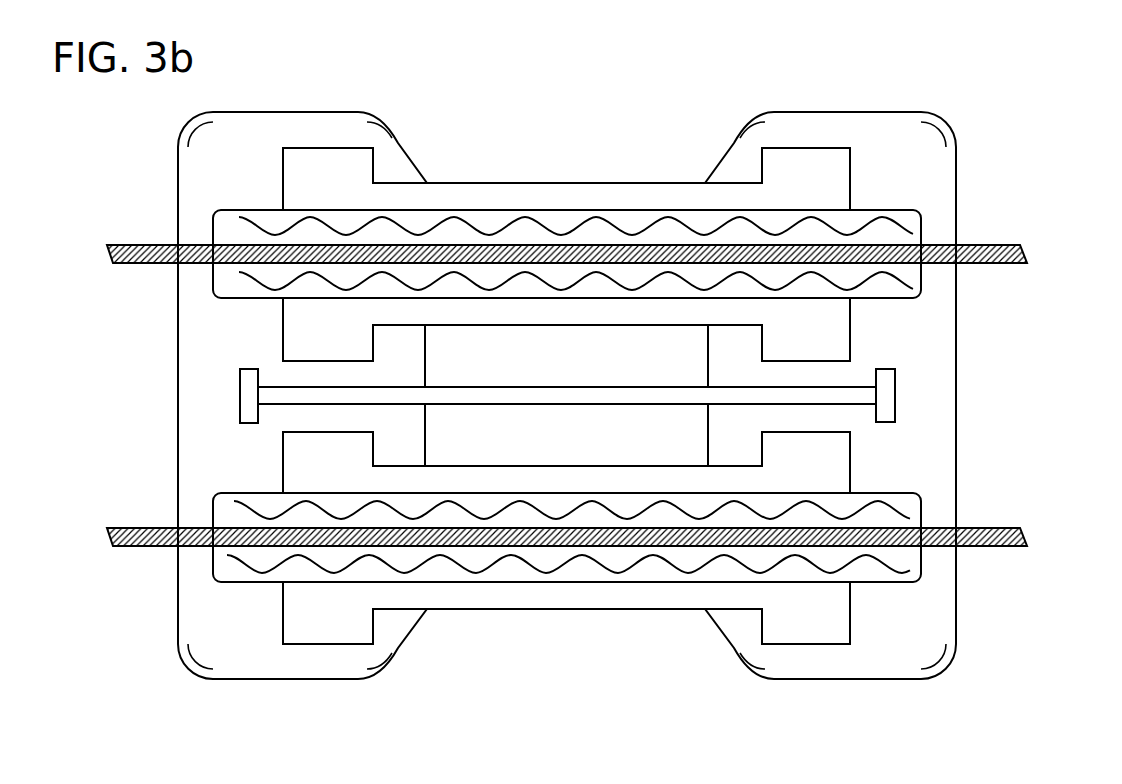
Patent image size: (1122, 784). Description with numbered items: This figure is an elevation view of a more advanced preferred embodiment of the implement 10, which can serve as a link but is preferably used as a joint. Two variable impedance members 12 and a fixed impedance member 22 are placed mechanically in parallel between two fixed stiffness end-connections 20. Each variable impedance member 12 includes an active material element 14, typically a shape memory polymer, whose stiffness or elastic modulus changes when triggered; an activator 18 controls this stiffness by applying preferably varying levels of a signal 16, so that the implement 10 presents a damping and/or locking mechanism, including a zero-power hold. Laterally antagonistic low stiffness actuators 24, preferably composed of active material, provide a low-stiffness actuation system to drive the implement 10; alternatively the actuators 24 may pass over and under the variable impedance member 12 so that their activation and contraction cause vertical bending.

The implement 10 is at (956, 697).
The variable impedance member 12 is at (708, 130).
The active material element 14 is at (645, 609).
The signal 16 is at (564, 563).
The activator 18 is at (501, 583).
The fixed stiffness end-connection 20 is at (247, 177).
The fixed impedance member 22 is at (238, 394).
The low stiffness actuator 24 is at (991, 264).